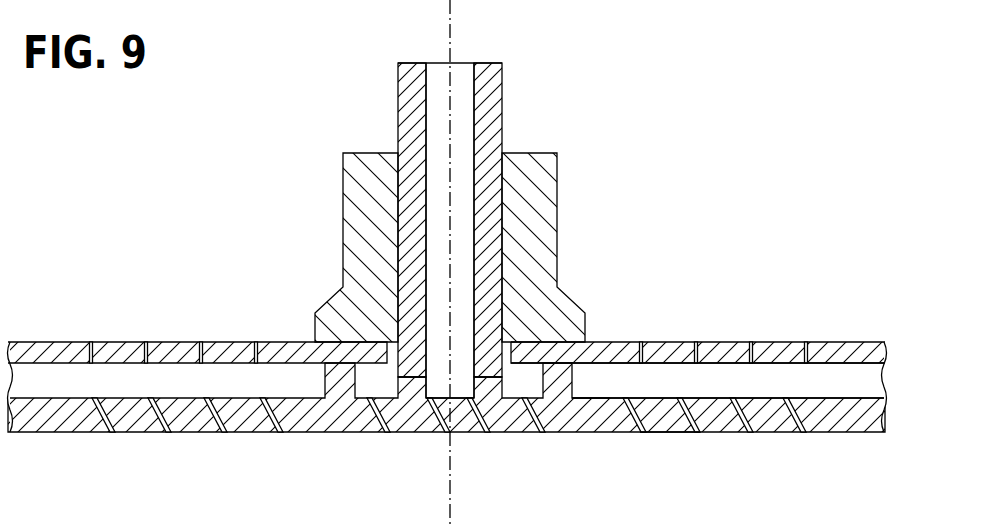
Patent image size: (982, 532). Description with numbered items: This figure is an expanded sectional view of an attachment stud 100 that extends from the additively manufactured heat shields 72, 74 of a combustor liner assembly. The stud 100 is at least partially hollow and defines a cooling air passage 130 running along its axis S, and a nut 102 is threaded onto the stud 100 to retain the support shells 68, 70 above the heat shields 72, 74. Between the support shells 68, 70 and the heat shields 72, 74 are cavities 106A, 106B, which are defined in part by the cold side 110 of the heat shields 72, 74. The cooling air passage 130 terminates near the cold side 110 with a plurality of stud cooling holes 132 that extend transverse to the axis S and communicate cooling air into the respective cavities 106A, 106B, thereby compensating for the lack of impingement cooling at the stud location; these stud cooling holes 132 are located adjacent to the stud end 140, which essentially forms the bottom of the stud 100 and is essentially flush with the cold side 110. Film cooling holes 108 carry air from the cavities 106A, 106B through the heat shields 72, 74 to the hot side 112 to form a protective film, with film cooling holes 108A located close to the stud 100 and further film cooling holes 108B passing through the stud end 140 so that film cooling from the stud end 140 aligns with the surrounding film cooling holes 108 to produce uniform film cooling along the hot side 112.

The axis S is at (447, 38).
The support shell 68 is at (446, 334).
The support shell 70 is at (714, 354).
The heat shield 72 is at (446, 423).
The heat shield 74 is at (765, 411).
The attachment stud 100 is at (505, 118).
The nut 102 is at (557, 228).
The cavity 106A is at (698, 316).
The cavity 106B is at (861, 382).
The film cooling holes 108 is at (266, 418).
The film cooling holes 108A is at (526, 414).
The film cooling holes 108B is at (424, 418).
The cold side 110 is at (573, 398).
The hot side 112 is at (663, 433).
The cooling air passage 130 is at (474, 83).
The stud cooling holes 132 is at (485, 377).
The stud end 140 is at (452, 398).